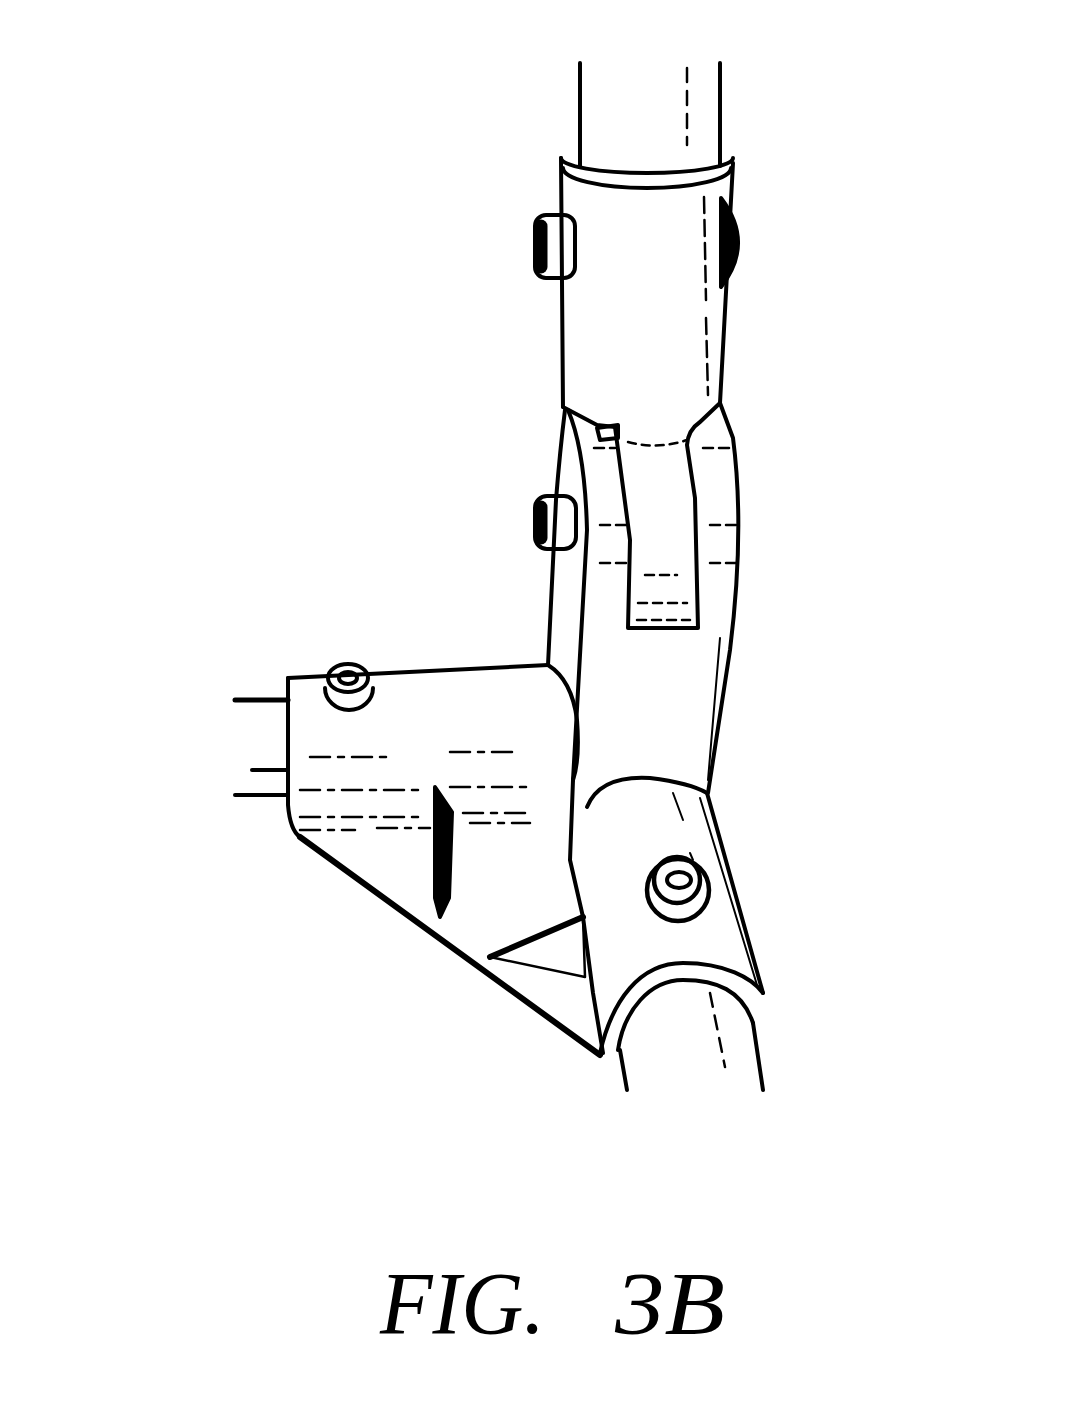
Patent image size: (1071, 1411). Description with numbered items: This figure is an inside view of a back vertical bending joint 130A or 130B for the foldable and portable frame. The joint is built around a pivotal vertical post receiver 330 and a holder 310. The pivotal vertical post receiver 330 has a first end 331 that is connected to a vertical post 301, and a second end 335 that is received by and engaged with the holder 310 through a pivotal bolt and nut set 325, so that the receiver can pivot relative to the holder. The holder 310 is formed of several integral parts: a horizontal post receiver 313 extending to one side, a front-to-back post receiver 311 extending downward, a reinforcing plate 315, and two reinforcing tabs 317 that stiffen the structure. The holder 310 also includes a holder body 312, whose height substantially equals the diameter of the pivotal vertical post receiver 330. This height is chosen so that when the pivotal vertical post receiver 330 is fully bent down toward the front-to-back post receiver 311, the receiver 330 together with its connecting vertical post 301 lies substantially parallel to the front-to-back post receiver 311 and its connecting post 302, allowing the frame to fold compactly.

The back vertical bending joint 130A is at (293, 88).
The back vertical bending joint 130B is at (481, 577).
The vertical post 301 is at (700, 120).
The connecting post 302 is at (733, 1057).
The holder 310 is at (745, 552).
The front-to-back post receiver 311 is at (737, 950).
The holder body 312 is at (690, 705).
The horizontal post receiver 313 is at (433, 688).
The reinforcing plate 315 is at (498, 900).
The reinforcing tabs 317 is at (428, 866).
The pivotal bolt and nut set 325 is at (535, 522).
The pivotal vertical post receiver 330 is at (675, 338).
The first end 331 is at (733, 180).
The second end 335 is at (672, 513).